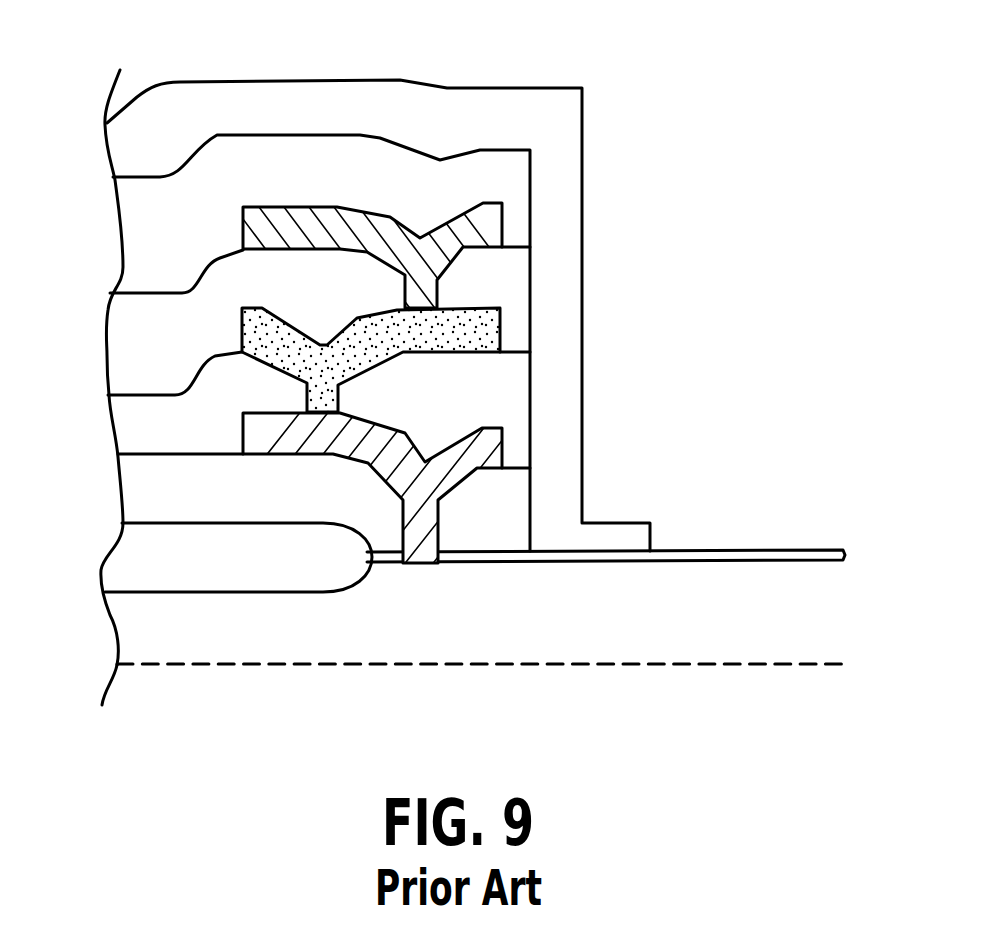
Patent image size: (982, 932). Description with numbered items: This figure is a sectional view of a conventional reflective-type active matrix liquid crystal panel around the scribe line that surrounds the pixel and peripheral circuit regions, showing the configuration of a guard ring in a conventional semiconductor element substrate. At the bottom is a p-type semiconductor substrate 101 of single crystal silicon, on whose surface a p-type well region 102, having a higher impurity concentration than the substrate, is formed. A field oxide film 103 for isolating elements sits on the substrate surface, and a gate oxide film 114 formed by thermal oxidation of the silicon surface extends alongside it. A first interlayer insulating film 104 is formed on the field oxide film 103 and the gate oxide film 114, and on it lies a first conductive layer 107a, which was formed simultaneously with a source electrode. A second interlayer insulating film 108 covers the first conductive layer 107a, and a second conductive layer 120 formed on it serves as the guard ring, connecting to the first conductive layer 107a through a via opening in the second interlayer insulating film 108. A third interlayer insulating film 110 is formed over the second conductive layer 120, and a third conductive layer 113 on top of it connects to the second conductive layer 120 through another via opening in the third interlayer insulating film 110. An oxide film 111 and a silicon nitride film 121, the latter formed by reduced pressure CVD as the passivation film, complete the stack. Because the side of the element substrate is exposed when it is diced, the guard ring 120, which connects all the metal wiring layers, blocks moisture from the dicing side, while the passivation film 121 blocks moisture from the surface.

The p-type semiconductor substrate 101 is at (329, 691).
The p-type well region 102 is at (479, 641).
The field oxide film 103 is at (162, 573).
The first interlayer insulating film 104 is at (158, 493).
The first conductive layer 107a is at (480, 450).
The second interlayer insulating film 108 is at (138, 428).
The third interlayer insulating film 110 is at (150, 357).
The oxide film 111 is at (153, 243).
The third conductive layer 113 is at (477, 228).
The gate oxide film 114 is at (810, 548).
The second conductive layer 120 is at (470, 318).
The silicon nitride film 121 is at (430, 110).